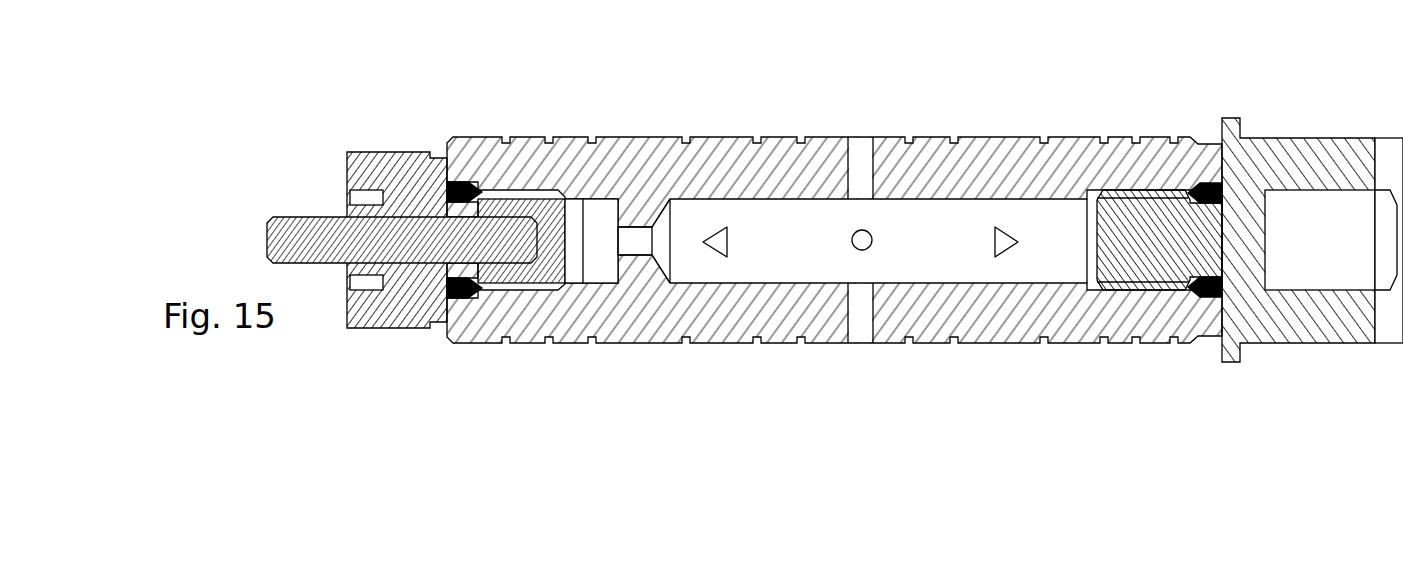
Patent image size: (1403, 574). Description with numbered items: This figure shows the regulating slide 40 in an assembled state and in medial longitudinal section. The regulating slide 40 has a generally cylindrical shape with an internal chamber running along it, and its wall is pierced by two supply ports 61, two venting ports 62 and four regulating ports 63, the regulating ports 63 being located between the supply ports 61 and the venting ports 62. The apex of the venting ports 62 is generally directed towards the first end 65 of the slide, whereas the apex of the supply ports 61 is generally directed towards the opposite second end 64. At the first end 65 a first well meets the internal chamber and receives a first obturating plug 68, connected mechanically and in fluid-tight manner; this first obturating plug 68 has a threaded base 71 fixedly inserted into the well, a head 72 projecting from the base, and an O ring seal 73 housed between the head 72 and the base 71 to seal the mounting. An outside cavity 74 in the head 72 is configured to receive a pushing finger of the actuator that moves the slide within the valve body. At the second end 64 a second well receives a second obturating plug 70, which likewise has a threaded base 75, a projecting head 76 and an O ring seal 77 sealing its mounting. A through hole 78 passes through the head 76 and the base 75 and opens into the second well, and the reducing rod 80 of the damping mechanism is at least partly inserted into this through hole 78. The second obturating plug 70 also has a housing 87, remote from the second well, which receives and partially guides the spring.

The regulating slide 40 is at (1048, 75).
The supply ports 61 is at (722, 240).
The venting ports 62 is at (998, 237).
The regulating ports 63 is at (857, 150).
The second end 64 is at (448, 178).
The first end 65 is at (1218, 153).
The first obturating plug 68 is at (1306, 365).
The second obturating plug 70 is at (398, 150).
The threaded base 71 is at (1133, 260).
The head 72 is at (1320, 155).
The O ring seal 73 is at (1212, 300).
The outside cavity 74 is at (1345, 258).
The threaded base 75 is at (538, 275).
The head 76 is at (399, 318).
The O ring seal 77 is at (466, 300).
The through hole 78 is at (542, 242).
The reducing rod 80 is at (300, 238).
The housing 87 is at (367, 197).